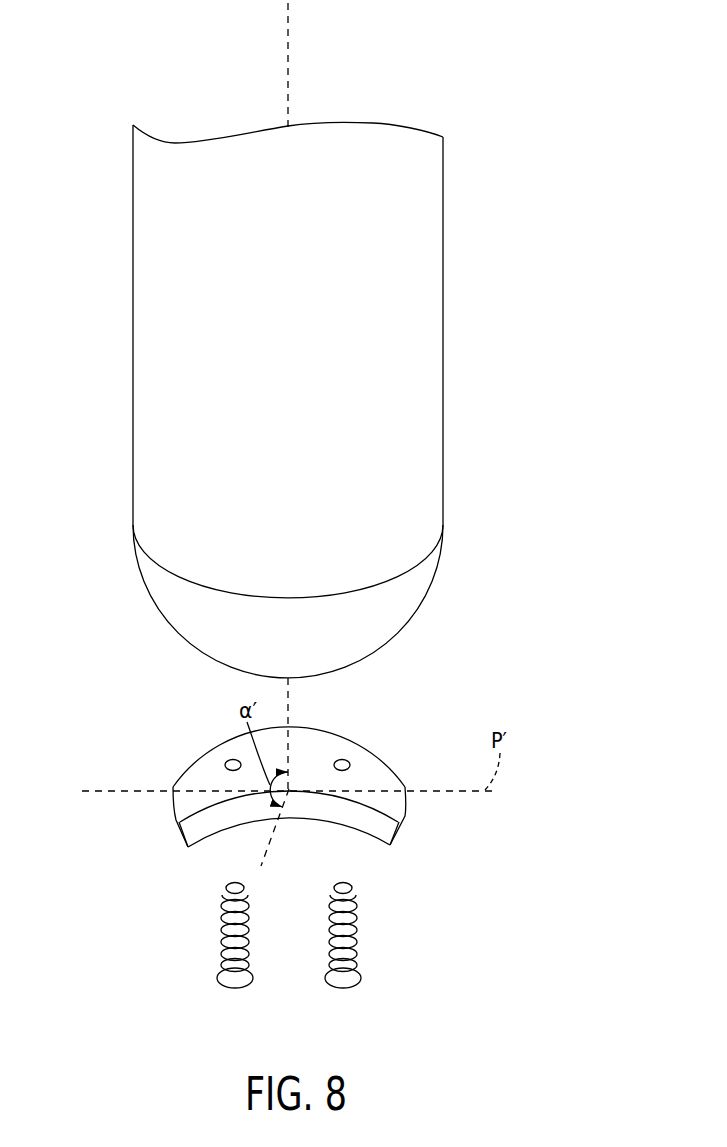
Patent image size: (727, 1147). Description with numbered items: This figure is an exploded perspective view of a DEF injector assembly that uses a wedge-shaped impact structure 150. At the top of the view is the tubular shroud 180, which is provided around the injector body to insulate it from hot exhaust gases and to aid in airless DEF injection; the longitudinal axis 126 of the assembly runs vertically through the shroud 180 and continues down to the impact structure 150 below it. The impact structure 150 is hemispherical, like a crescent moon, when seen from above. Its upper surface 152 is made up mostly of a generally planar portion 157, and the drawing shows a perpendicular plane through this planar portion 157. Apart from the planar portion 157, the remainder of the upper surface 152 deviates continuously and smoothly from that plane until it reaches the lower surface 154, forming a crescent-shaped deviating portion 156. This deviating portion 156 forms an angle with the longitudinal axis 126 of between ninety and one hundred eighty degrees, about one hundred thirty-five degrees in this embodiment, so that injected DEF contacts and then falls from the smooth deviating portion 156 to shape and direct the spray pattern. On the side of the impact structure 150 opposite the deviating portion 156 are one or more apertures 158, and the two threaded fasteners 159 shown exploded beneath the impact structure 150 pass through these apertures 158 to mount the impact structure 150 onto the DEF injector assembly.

The longitudinal axis 126 is at (291, 46).
The tubular shroud 180 is at (443, 380).
The wedge-shaped impact structure 150 is at (290, 789).
The upper surface 152 is at (197, 782).
The lower surface 154 is at (373, 836).
The deviating portion 156 is at (213, 816).
The generally planar portion 157 is at (325, 742).
The apertures 158 is at (230, 752).
The threaded fasteners 159 is at (355, 943).